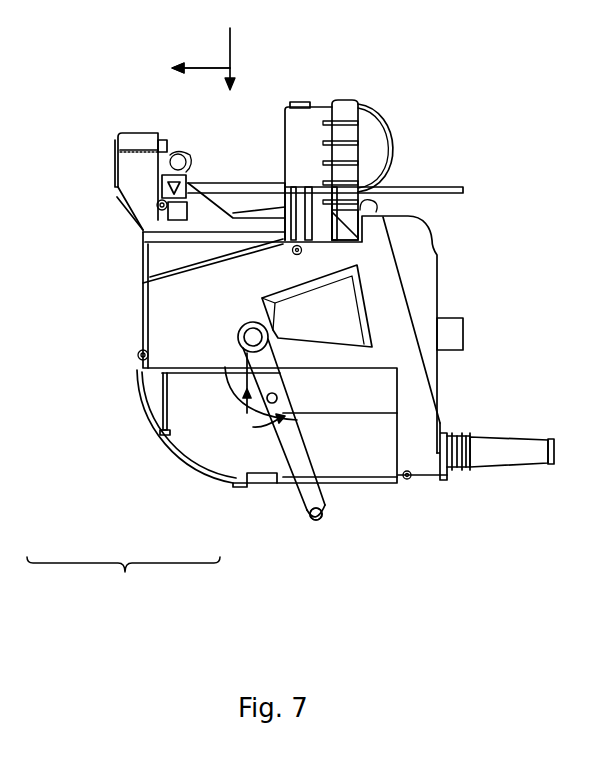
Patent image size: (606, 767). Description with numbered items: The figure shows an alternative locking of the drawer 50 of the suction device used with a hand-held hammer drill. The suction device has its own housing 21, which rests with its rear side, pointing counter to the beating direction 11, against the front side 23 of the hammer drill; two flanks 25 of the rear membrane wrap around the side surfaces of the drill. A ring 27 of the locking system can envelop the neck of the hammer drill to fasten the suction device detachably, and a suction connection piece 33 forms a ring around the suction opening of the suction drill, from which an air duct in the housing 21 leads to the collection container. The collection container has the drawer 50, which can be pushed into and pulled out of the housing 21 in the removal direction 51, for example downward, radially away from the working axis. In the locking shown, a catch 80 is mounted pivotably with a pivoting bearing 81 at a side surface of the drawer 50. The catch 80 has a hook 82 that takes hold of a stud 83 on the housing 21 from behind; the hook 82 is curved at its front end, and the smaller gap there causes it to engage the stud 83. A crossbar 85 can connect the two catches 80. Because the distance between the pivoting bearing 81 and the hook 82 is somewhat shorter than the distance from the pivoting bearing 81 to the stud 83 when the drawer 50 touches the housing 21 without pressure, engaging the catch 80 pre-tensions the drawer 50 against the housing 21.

The beating direction 11 is at (215, 68).
The housing 21 is at (418, 282).
The front side 23 is at (440, 403).
The flanks 25 is at (457, 333).
The ring 27 is at (337, 162).
The suction connection piece 33 is at (137, 155).
The drawer 50 is at (353, 500).
The removal direction 51 is at (232, 46).
The catch 80 is at (123, 584).
The pivoting bearing 81 is at (277, 417).
The hook 82 is at (280, 383).
The stud 83 is at (247, 368).
The crossbar 85 is at (308, 514).